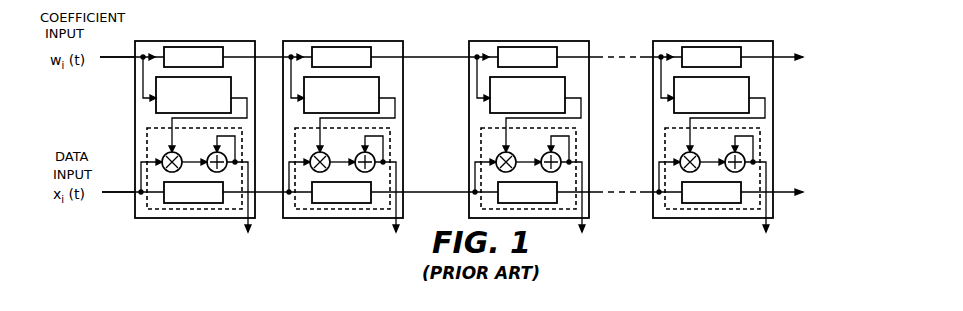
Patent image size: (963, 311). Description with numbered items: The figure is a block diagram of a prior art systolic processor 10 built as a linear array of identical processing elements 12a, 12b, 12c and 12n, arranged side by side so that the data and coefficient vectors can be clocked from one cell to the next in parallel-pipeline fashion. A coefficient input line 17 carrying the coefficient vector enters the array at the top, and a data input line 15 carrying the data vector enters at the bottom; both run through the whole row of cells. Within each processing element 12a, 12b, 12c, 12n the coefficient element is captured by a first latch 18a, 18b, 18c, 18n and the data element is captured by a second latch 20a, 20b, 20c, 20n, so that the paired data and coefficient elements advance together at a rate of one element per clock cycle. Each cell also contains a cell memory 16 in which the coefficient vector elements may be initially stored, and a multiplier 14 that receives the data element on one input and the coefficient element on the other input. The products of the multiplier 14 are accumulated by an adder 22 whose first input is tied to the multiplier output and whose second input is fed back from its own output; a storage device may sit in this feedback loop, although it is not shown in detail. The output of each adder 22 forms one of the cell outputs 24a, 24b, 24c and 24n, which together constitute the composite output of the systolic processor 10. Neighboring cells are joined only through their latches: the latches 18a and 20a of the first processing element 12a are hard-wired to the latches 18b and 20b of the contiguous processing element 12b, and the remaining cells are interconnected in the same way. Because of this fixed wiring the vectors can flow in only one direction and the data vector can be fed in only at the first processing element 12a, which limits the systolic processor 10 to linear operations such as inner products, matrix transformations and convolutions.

The systolic processor 10 is at (448, 118).
The processing element 12a is at (195, 118).
The processing element 12b is at (343, 118).
The processing element 12c is at (529, 118).
The processing element 12n is at (713, 118).
The multiplier 14 is at (436, 168).
The line 15 is at (118, 196).
The cell memory 16 is at (479, 113).
The line 17 is at (120, 60).
The first latch 18a is at (209, 43).
The first latch 18b is at (357, 43).
The first latch 18c is at (542, 43).
The first latch 18n is at (727, 43).
The second latch 20a is at (172, 214).
The second latch 20b is at (320, 214).
The second latch 20c is at (492, 201).
The second latch 20n is at (696, 214).
The adder 22 is at (471, 152).
The output 24a is at (221, 204).
The output 24b is at (369, 204).
The output 24c is at (597, 204).
The output 24n is at (742, 204).